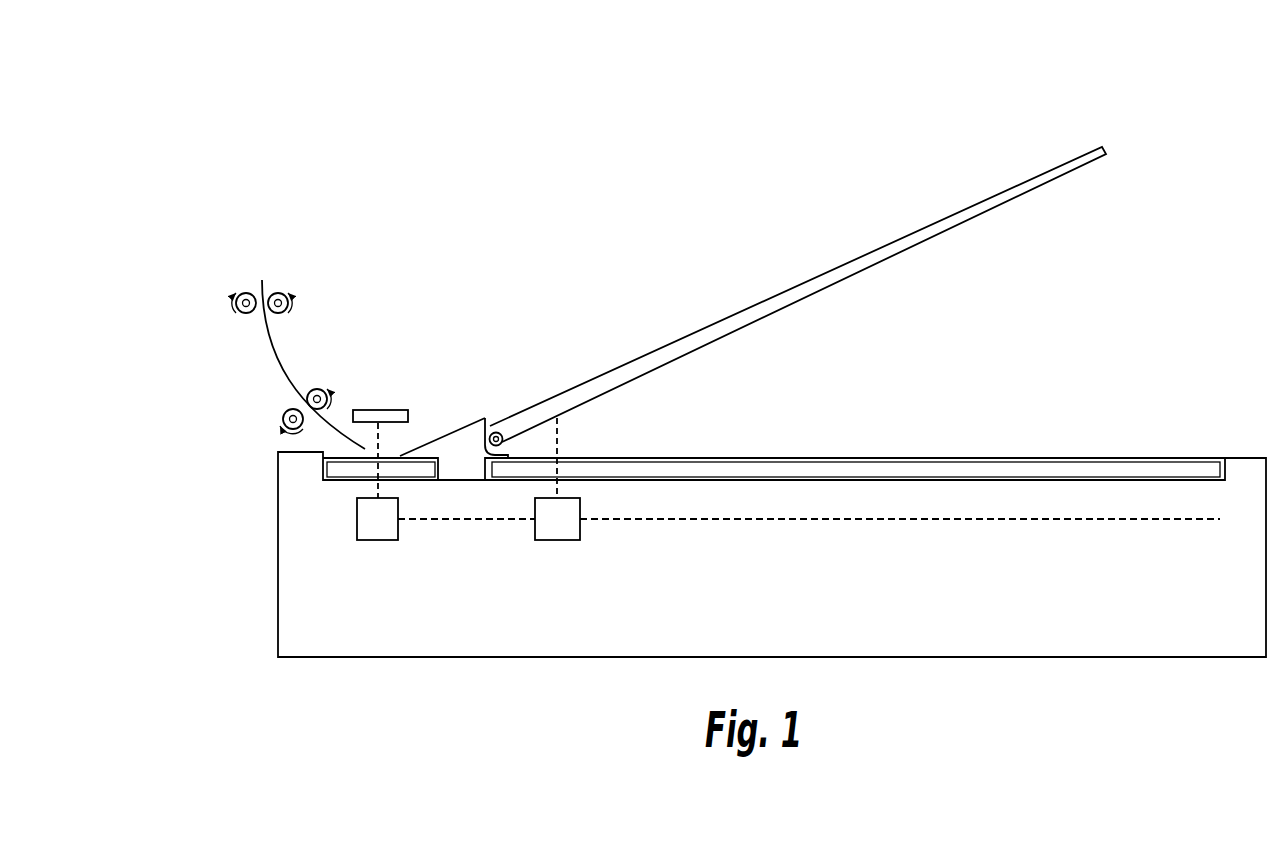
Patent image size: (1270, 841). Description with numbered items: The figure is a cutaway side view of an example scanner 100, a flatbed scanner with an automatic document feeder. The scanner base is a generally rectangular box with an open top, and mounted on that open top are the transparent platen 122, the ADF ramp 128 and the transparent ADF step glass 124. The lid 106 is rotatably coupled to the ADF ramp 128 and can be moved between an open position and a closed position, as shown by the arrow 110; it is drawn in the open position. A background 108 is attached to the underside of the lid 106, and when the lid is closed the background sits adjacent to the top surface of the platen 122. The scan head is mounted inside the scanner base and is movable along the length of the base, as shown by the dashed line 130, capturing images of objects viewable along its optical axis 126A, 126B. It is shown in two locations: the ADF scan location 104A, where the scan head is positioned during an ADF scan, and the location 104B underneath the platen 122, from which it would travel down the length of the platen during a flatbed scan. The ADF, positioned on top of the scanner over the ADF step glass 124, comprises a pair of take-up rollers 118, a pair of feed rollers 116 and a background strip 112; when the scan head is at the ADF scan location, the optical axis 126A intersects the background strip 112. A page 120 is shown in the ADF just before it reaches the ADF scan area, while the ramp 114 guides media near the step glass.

The scanner 100 is at (512, 124).
The ADF scan location 104A is at (375, 542).
The flatbed scan location 104B is at (553, 542).
The lid 106 is at (1108, 151).
The background 108 is at (960, 232).
The arrow 110 is at (1113, 162).
The background strip 112 is at (392, 428).
The media guide ramp 114 is at (402, 453).
The feed rollers 116 is at (285, 408).
The take-up rollers 118 is at (248, 284).
The page 120 is at (279, 357).
The transparent platen 122 is at (937, 456).
The ADF step glass 124 is at (328, 483).
The optical axis 126A is at (368, 433).
The optical axis 126B is at (562, 447).
The ADF ramp 128 is at (486, 420).
The dashed line 130 is at (857, 521).